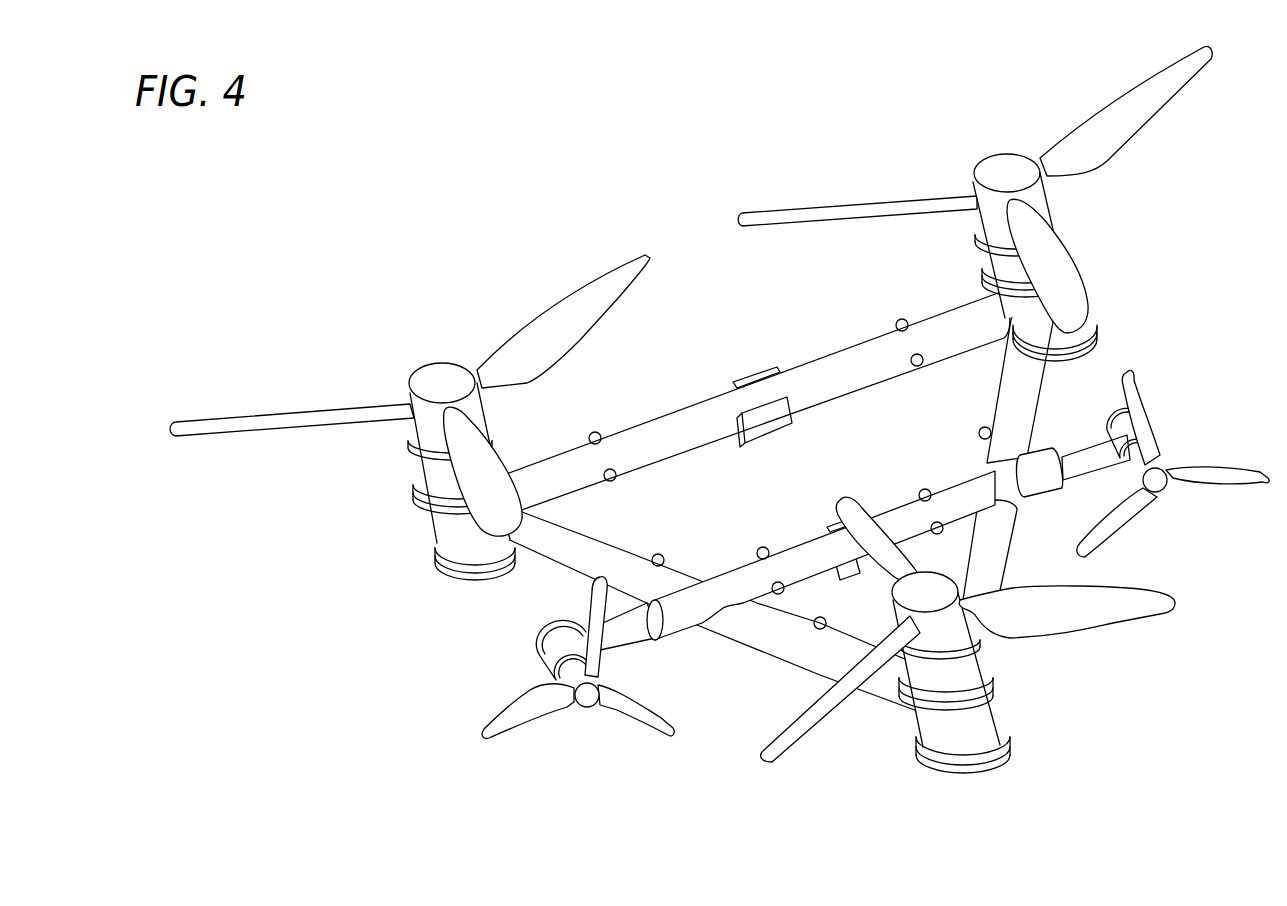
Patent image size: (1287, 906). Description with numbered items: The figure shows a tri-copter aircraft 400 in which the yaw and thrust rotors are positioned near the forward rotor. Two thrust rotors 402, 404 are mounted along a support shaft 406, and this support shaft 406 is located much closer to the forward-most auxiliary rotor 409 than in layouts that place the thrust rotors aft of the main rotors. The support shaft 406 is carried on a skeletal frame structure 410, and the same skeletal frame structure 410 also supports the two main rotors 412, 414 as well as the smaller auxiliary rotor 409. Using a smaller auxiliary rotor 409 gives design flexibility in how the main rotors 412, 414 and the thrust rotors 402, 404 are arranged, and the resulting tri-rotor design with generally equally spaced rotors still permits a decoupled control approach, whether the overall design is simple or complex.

The aircraft 400 is at (494, 214).
The thrust rotor 402 is at (522, 712).
The thrust rotor 404 is at (1162, 455).
The support shaft 406 is at (1037, 450).
The auxiliary rotor 409 is at (1110, 605).
The skeletal frame structure 410 is at (795, 368).
The main rotor 412 is at (262, 418).
The main rotor 414 is at (1112, 121).